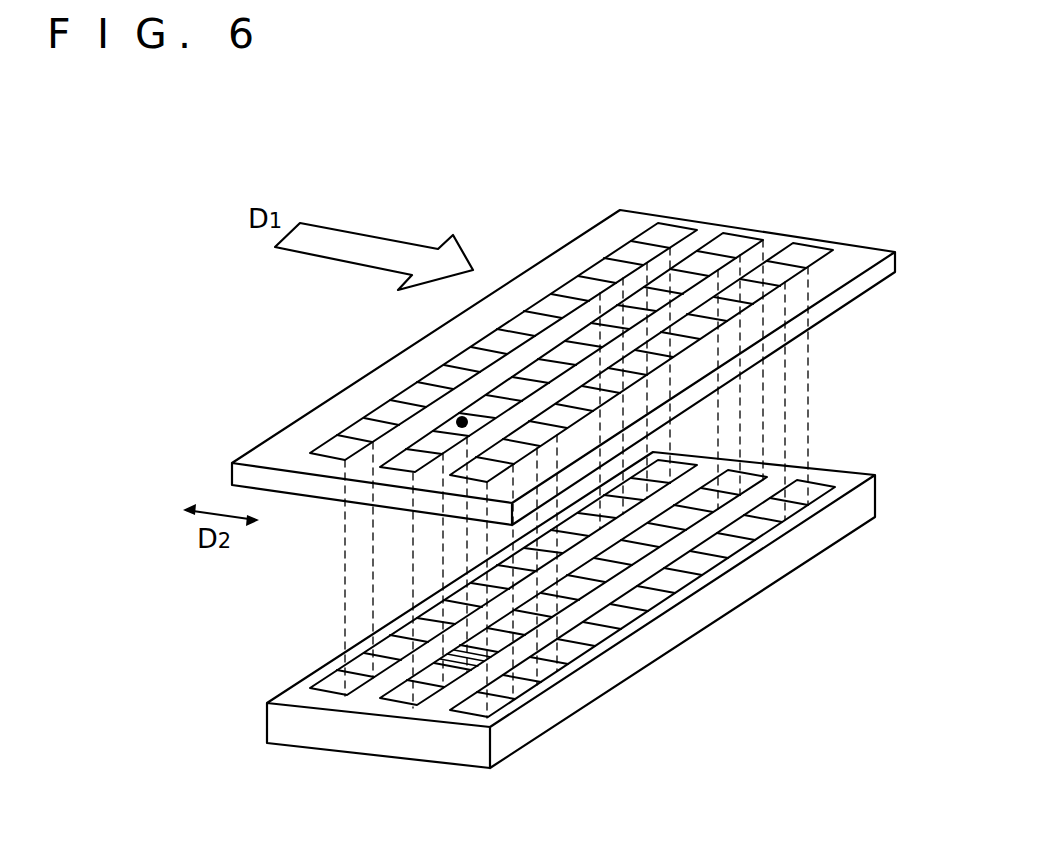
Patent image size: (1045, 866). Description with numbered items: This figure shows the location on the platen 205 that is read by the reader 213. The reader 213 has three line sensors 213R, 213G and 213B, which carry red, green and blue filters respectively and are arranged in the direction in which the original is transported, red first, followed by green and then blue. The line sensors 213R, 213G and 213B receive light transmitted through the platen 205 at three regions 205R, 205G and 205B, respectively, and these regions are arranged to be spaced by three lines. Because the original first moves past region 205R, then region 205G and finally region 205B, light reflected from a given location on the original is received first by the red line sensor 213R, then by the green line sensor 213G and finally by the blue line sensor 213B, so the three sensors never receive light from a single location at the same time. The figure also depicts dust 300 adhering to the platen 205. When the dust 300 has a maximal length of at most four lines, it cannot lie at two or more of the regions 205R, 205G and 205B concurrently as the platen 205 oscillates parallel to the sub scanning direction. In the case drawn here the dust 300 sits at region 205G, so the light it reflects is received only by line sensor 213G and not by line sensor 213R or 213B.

The platen 205 is at (592, 225).
The red region of platen 205R is at (680, 228).
The green region of platen 205G is at (750, 238).
The blue region of platen 205B is at (820, 245).
The dust 300 is at (460, 418).
The reader 213 is at (303, 681).
The red line sensor 213R is at (307, 705).
The green line sensor 213G is at (388, 714).
The blue line sensor 213B is at (458, 722).